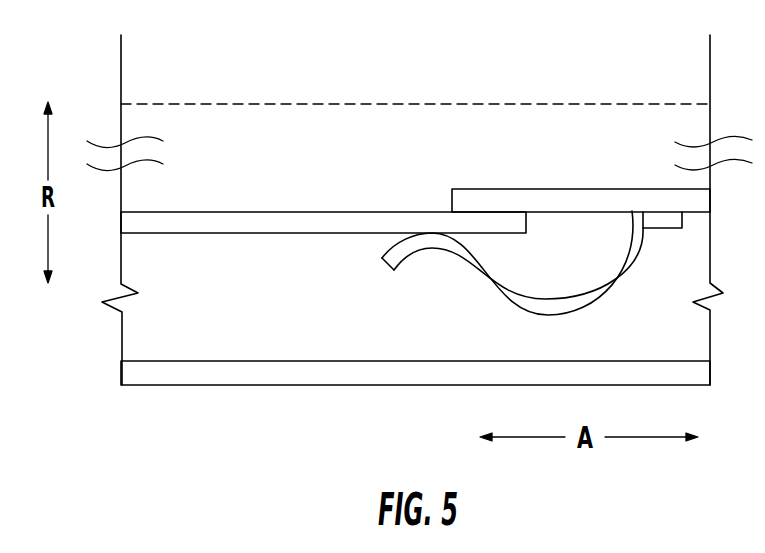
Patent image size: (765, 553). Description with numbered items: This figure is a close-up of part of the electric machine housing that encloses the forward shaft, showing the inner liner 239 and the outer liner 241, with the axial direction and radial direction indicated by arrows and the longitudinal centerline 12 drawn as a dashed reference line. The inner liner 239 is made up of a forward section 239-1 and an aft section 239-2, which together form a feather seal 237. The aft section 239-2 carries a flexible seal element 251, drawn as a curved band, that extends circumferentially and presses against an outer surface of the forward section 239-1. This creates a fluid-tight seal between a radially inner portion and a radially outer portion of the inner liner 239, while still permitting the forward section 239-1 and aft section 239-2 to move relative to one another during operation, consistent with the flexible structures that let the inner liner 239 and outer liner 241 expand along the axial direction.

The longitudinal centerline 12 is at (237, 103).
The inner liner 239 is at (415, 136).
The forward section 239-1 is at (280, 218).
The aft section 239-2 is at (583, 189).
The feather seal 237 is at (466, 279).
The flexible seal element 251 is at (573, 310).
The outer liner 241 is at (245, 387).